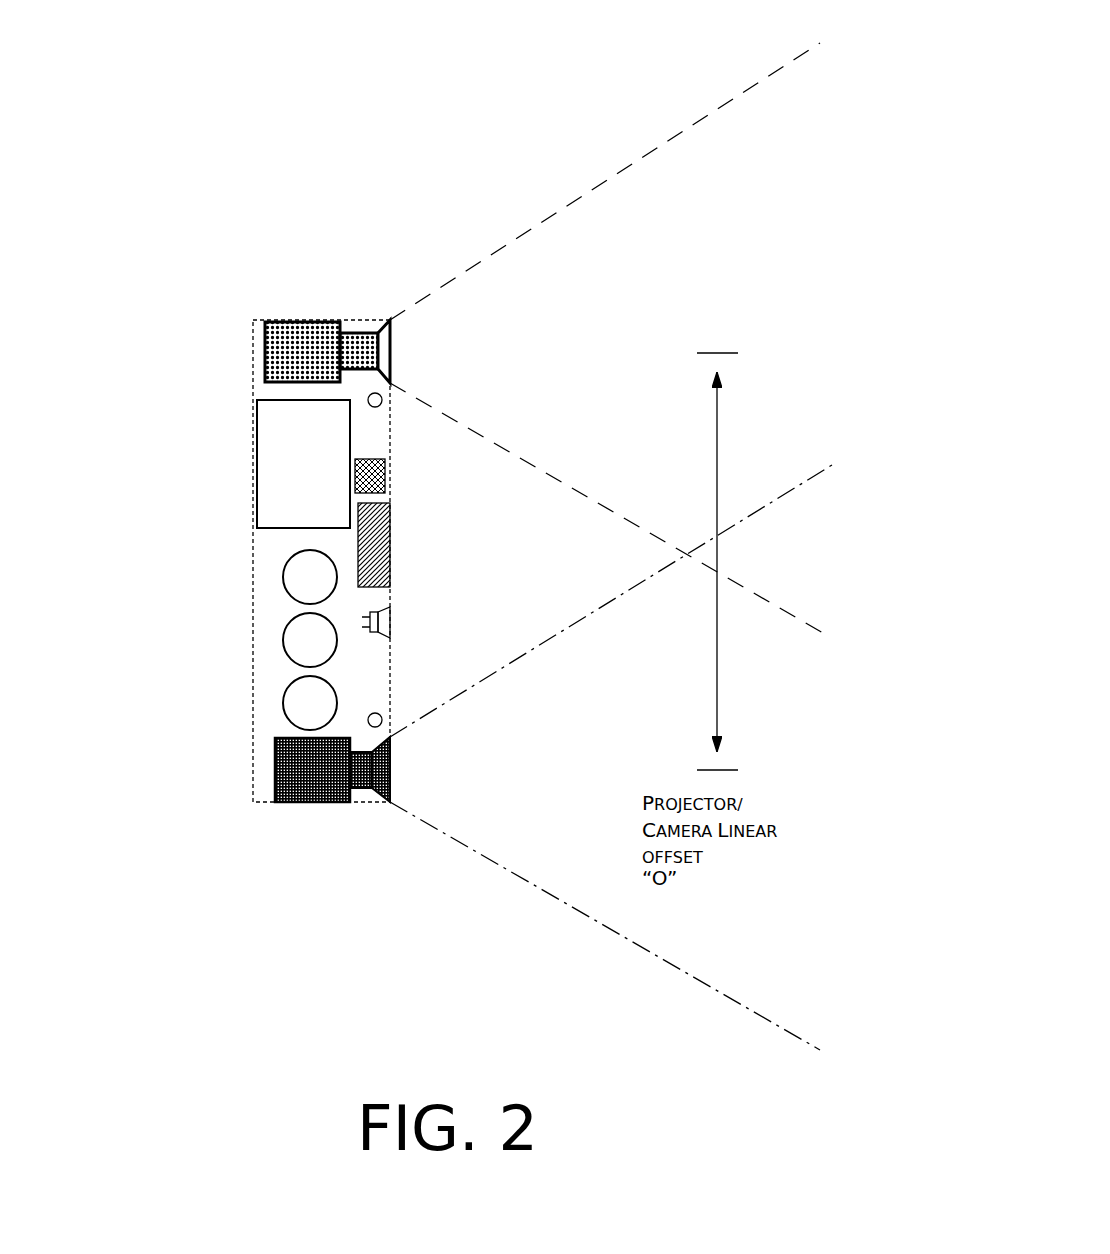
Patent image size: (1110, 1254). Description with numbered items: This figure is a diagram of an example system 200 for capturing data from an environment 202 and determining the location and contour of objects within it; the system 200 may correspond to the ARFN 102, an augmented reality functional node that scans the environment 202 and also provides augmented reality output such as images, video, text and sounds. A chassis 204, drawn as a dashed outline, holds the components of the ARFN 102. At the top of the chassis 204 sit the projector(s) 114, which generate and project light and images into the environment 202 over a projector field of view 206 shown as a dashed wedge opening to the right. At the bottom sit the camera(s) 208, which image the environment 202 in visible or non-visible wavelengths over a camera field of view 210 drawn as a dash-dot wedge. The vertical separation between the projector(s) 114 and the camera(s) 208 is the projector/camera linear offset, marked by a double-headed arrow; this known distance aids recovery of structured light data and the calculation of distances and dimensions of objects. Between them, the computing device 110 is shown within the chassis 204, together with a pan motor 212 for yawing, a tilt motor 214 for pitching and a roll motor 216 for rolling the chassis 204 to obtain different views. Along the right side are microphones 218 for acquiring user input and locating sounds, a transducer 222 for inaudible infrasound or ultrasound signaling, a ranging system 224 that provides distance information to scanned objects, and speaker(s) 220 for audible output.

The system 200 is at (200, 58).
The ARFN 102 is at (287, 317).
The chassis 204 is at (322, 317).
The projector(s) 114 is at (302, 352).
The computing device 110 is at (302, 463).
The microphones 218 is at (381, 396).
The transducer 222 is at (387, 463).
The ranging system 224 is at (390, 540).
The pan motor 212 is at (283, 577).
The tilt motor 214 is at (283, 640).
The roll motor 216 is at (283, 703).
The speaker(s) 220 is at (390, 620).
The camera(s) 208 is at (273, 798).
The projector field of view 206 is at (613, 177).
The camera field of view 210 is at (562, 900).
The environment 202 is at (803, 563).